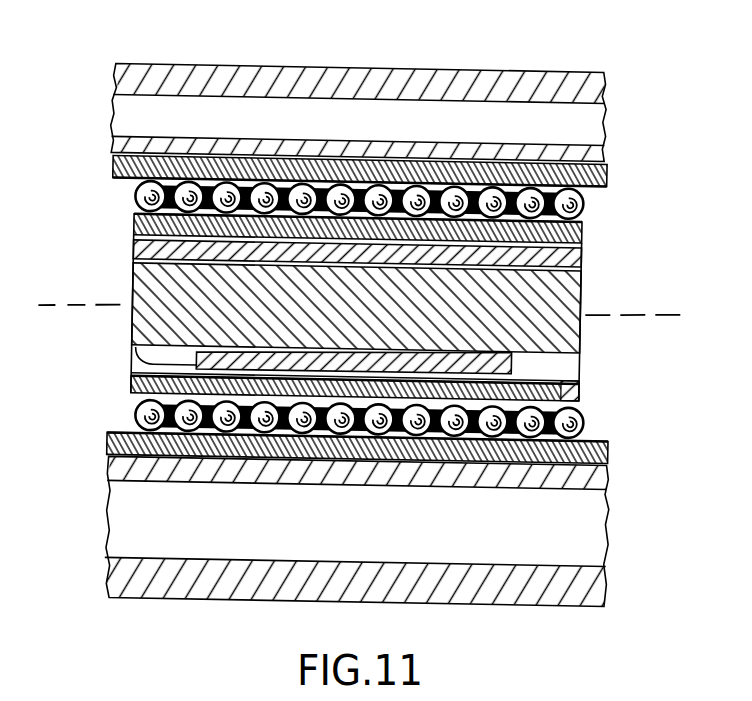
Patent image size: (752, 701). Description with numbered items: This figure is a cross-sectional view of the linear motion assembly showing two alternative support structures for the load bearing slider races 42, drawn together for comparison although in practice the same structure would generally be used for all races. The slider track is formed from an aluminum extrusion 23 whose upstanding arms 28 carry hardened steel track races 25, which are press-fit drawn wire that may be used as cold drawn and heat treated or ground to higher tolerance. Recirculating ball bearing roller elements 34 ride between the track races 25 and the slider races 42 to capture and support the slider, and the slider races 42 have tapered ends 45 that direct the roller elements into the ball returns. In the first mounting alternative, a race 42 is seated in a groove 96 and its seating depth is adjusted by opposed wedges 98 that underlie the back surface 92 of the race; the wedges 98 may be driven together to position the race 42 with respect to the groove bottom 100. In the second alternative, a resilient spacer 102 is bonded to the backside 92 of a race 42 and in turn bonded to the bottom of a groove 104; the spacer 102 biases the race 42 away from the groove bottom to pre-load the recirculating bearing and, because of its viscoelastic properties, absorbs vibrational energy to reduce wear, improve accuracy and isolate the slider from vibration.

The upstanding arm 28 is at (569, 68).
The track race 25 is at (603, 171).
The ball bearing roller element 34 is at (134, 204).
The tapered end 45 is at (132, 220).
The resilient spacer 102 is at (132, 252).
The groove 104 is at (574, 257).
The groove 96 is at (578, 362).
The groove bottom 100 is at (134, 358).
The opposed wedge 98 is at (134, 367).
The back surface of race 92 is at (562, 374).
The slider race 42 is at (132, 389).
The aluminum extrusion 23 is at (597, 603).